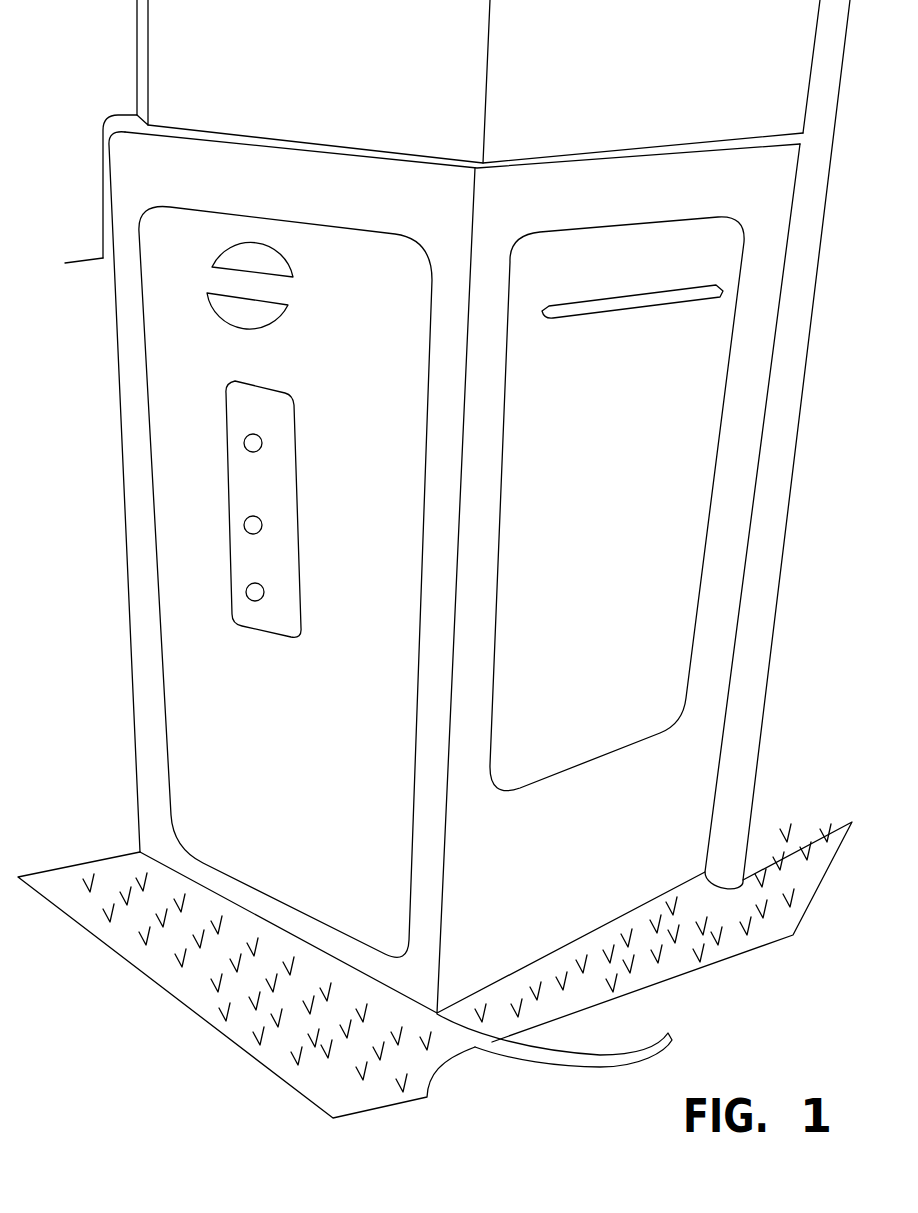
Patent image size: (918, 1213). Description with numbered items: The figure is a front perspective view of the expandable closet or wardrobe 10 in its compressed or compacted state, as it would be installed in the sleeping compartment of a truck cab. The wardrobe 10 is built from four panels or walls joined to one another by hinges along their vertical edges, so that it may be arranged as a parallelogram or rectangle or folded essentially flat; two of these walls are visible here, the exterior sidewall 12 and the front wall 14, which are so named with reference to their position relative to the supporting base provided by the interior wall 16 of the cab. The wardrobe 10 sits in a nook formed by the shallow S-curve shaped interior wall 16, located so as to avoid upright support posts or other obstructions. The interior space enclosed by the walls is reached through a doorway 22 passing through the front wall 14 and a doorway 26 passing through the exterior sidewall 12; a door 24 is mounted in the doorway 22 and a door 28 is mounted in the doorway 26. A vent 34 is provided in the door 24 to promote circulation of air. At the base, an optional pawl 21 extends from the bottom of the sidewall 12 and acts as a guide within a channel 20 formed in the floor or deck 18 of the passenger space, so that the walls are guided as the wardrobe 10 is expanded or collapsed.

The expandable wardrobe 10 is at (534, 134).
The exterior sidewall 12 is at (678, 750).
The front wall 14 is at (148, 738).
The interior wall 16 is at (48, 532).
The floor or deck 18 is at (673, 967).
The channel 20 is at (537, 1057).
The pawl 21 is at (437, 1012).
The doorway 22 is at (345, 232).
The door 24 is at (367, 420).
The doorway 26 is at (703, 216).
The door 28 is at (620, 415).
The vent 34 is at (273, 265).